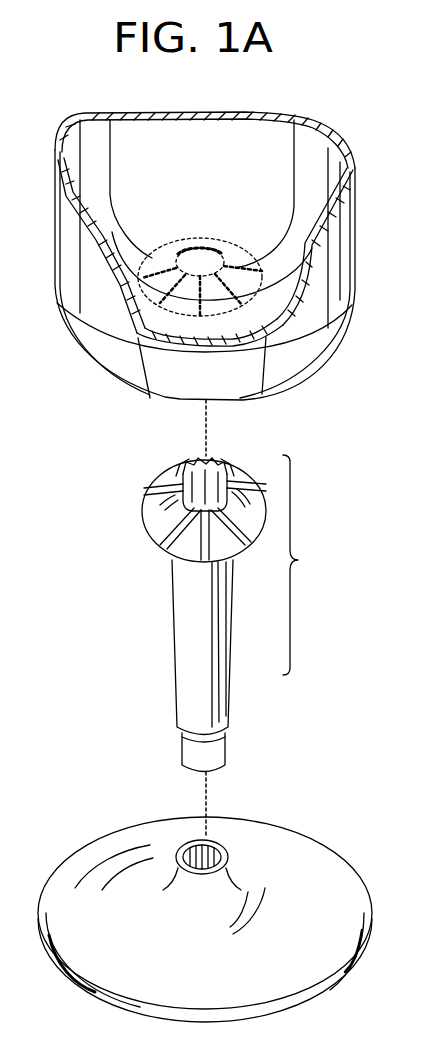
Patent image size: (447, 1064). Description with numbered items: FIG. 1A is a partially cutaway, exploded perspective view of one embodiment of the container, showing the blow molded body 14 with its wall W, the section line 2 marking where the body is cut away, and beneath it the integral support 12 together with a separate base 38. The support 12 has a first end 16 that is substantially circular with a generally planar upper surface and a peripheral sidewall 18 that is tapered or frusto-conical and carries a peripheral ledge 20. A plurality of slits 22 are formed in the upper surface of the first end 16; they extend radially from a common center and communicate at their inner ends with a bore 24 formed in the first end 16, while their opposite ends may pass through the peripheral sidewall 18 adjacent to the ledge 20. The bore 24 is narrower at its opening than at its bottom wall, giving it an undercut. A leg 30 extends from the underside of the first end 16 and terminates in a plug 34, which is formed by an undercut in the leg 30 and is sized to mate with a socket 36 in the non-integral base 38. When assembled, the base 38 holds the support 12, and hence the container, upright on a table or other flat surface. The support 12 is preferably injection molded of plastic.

The bowl / work holder 14 is at (374, 91).
The wall of bowl W is at (360, 225).
The section line 2- 2 is at (48, 182).
The support 12 is at (192, 624).
The first end 16 is at (178, 495).
The peripheral sidewall 18 is at (143, 482).
The peripheral ledge 20 is at (148, 494).
The slits 22 is at (163, 514).
The bore 24 is at (200, 459).
The leg 30 is at (190, 606).
The plug 34 is at (232, 740).
The socket 36 is at (196, 850).
The base 38 is at (207, 896).